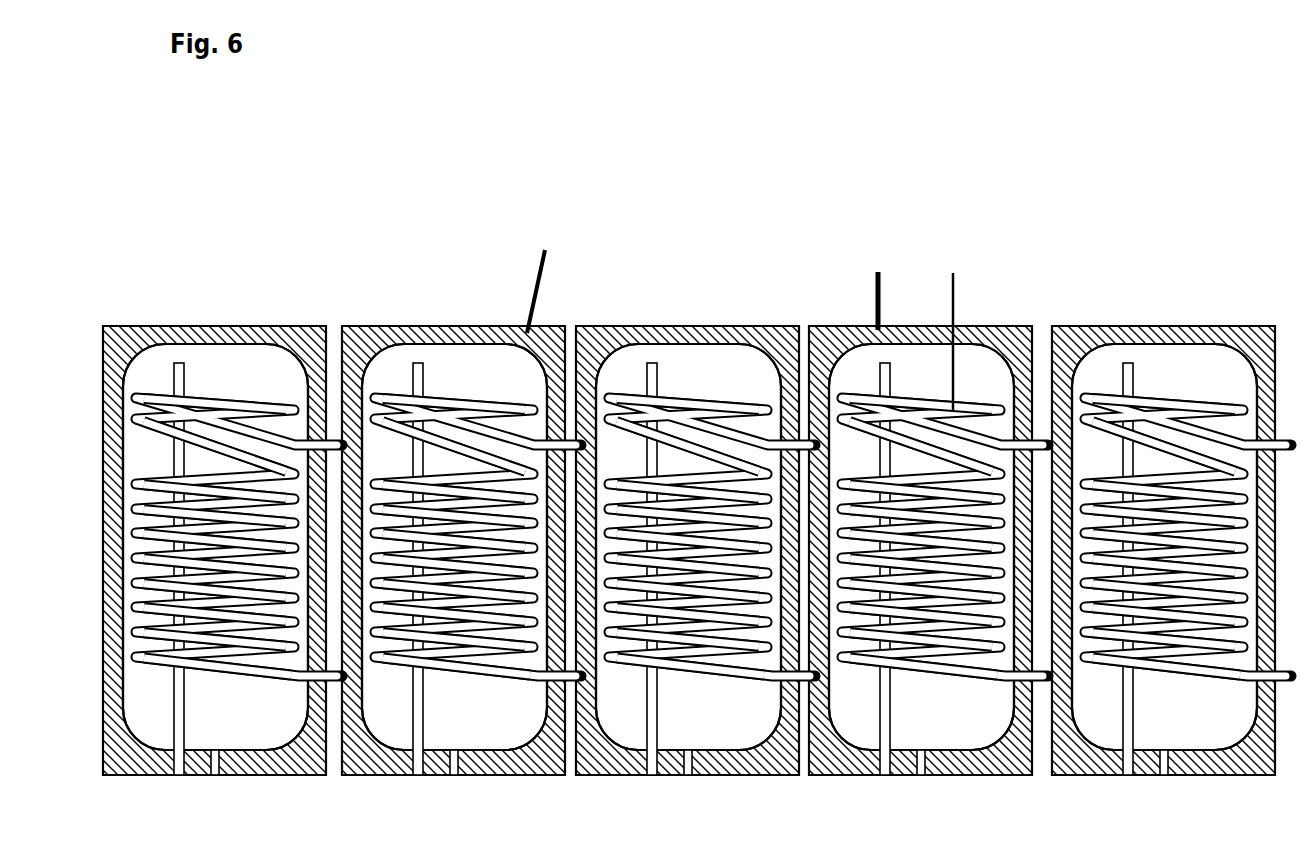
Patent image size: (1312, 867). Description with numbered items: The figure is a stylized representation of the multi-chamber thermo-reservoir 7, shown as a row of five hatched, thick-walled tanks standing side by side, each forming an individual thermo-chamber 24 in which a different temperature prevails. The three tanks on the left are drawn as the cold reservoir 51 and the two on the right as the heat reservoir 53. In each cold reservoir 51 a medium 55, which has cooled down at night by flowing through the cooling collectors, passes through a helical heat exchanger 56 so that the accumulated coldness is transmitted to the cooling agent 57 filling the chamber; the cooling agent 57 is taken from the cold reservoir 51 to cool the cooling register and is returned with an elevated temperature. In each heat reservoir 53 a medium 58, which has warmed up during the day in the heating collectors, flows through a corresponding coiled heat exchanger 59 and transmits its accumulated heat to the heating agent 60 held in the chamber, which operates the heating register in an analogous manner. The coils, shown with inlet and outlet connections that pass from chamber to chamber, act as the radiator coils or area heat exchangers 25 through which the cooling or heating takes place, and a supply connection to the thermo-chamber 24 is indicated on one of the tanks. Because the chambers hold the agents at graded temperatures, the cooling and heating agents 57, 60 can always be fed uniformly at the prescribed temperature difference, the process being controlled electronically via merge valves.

The multi-chamber thermo-reservoir 7 is at (543, 275).
The thermo-chamber 24 is at (873, 287).
The area heat exchanger 25 is at (953, 329).
The cold reservoir 51 is at (170, 305).
The heat reservoir 53 is at (1007, 277).
The medium 55 is at (273, 405).
The heat exchanger 56 is at (208, 385).
The cooling agent 57 is at (240, 355).
The medium 58 is at (990, 410).
The heat exchanger 59 is at (903, 388).
The heating agent 60 is at (915, 375).